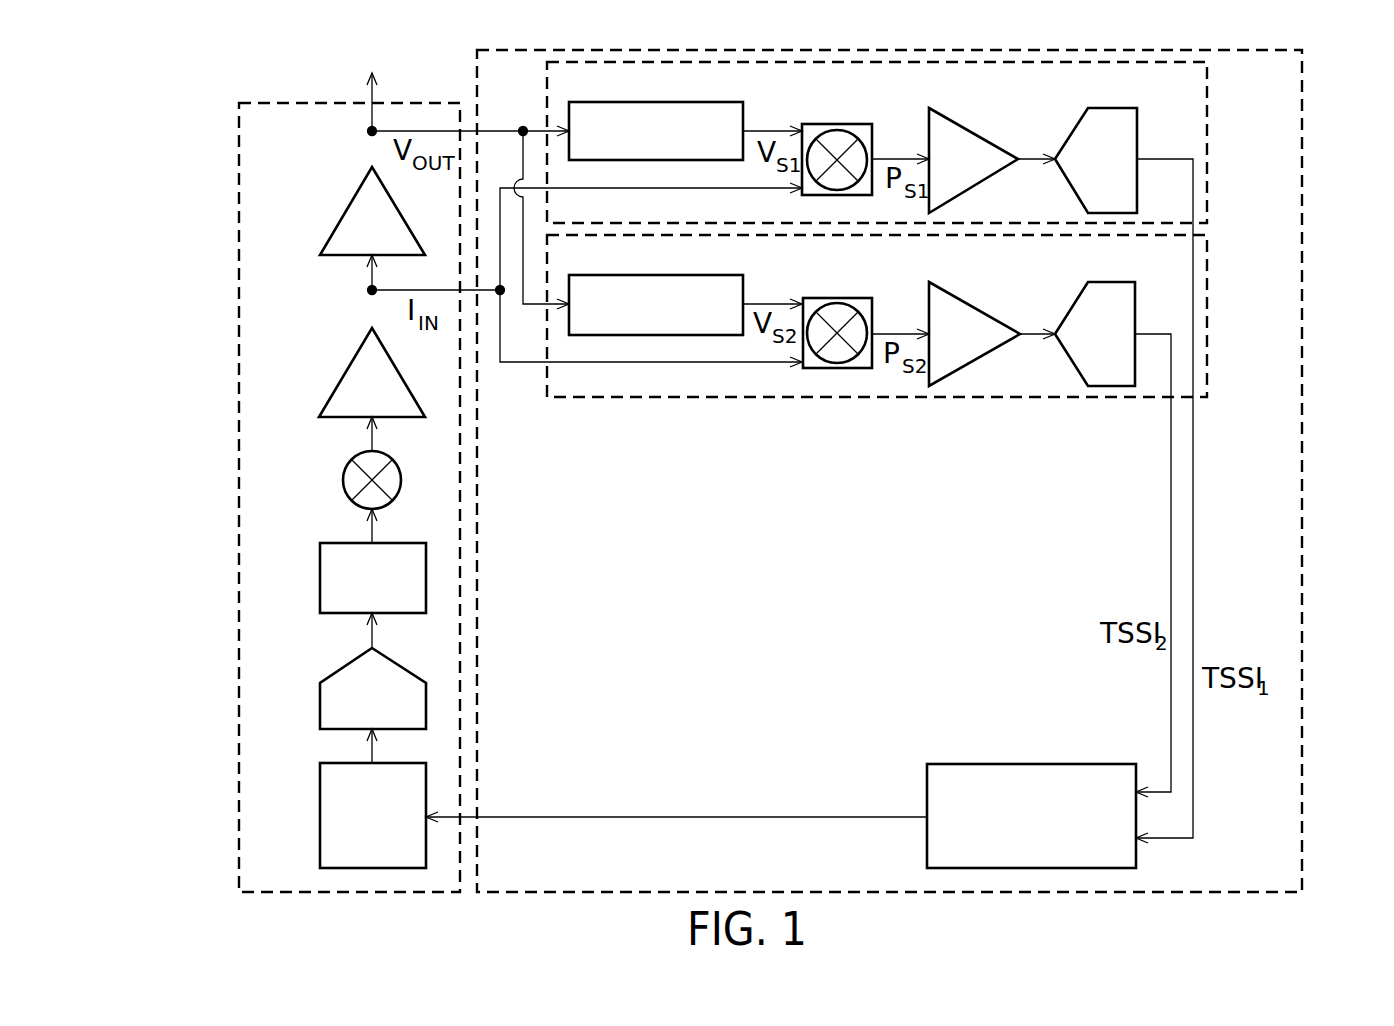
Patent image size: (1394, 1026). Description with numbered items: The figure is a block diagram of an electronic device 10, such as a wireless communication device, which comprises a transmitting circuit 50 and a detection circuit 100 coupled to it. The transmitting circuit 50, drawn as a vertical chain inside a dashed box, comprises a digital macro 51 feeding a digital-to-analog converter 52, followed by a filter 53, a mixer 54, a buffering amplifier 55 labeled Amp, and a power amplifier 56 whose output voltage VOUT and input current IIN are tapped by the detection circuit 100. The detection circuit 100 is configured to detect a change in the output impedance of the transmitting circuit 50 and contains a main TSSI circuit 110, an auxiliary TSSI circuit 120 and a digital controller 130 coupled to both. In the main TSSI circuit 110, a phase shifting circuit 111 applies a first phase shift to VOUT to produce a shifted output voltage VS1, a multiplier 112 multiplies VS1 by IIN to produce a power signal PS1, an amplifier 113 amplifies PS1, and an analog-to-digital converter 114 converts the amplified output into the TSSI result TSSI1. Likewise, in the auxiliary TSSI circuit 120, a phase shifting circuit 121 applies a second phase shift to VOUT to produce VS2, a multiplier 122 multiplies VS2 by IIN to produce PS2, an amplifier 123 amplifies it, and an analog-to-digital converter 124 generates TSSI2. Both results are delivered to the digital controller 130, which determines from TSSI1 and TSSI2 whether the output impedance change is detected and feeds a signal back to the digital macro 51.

The electronic device 10 is at (195, 88).
The transmitting circuit 50 is at (237, 503).
The digital macro 51 is at (320, 813).
The digital-to-analog converter 52 is at (320, 702).
The filter 53 is at (320, 575).
The mixer 54 is at (343, 475).
The buffering amplifier 55 is at (346, 368).
The power amplifier 56 is at (346, 205).
The detection circuit 100 is at (1302, 468).
The main TSSI circuit 110 is at (1208, 117).
The phase shifting circuit 111 is at (658, 102).
The multiplier 112 is at (837, 123).
The amplifier 113 is at (977, 131).
The analog-to-digital converter 114 is at (1112, 108).
The auxiliary TSSI circuit 120 is at (1208, 290).
The phase shifting circuit 121 is at (658, 275).
The multiplier 122 is at (837, 297).
The amplifier 123 is at (975, 306).
The analog-to-digital converter 124 is at (1112, 282).
The digital controller 130 is at (1030, 764).